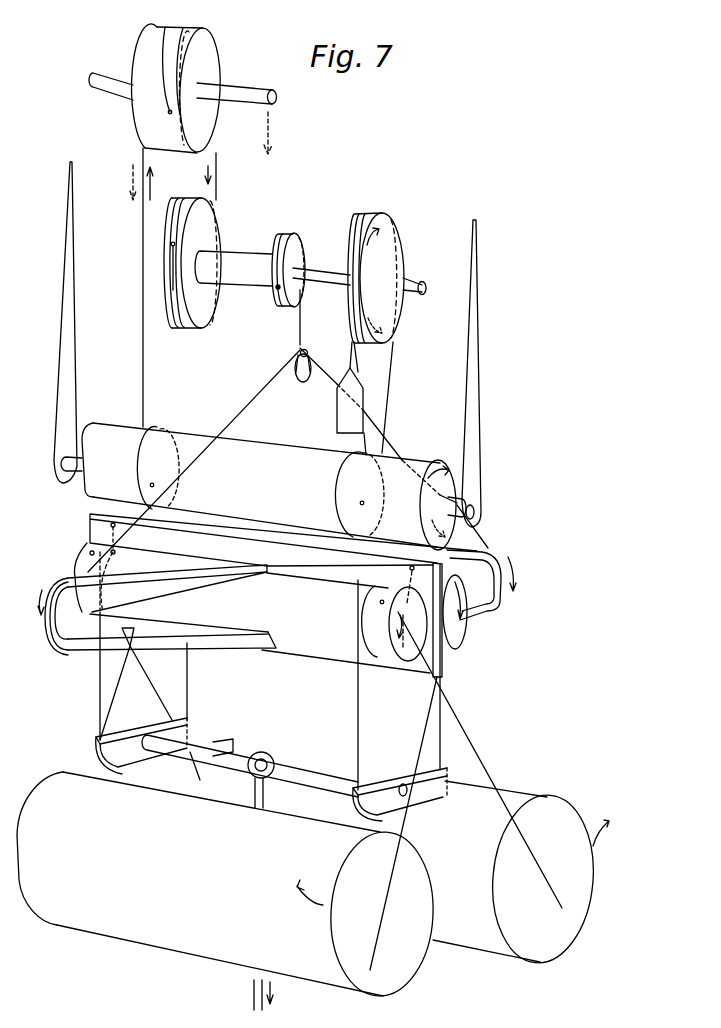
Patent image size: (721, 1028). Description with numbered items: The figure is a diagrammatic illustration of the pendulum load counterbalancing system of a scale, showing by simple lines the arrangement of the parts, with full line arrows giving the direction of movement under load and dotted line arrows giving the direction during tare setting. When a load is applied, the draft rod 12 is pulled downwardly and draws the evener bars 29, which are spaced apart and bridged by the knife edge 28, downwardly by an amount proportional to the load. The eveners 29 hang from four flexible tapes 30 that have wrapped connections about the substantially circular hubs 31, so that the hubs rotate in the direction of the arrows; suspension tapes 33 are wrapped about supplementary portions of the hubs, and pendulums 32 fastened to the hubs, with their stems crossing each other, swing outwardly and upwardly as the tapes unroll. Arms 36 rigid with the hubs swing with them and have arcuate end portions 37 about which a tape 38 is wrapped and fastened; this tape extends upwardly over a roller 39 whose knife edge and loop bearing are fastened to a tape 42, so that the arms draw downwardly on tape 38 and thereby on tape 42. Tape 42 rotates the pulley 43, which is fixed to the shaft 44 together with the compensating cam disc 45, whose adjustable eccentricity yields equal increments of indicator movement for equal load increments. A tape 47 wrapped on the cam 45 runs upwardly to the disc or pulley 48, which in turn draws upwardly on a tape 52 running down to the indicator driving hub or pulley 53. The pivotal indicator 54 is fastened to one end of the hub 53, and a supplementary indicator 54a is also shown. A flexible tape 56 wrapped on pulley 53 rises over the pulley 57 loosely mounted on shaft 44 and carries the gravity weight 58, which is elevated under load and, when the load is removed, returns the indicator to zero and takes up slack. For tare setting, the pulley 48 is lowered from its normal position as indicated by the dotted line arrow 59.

The draft rod 12 is at (266, 800).
The knife edge 28 is at (307, 773).
The evener bars 29 is at (145, 722).
The flexible tapes 30 is at (98, 693).
The circular hubs 31 is at (342, 574).
The pendulums 32 is at (313, 885).
The suspension tapes 33 is at (114, 550).
The arms 36 is at (75, 652).
The arcuate end portions 37 is at (285, 577).
The tape 38 is at (230, 414).
The roller 39 is at (295, 373).
The tape 42 is at (297, 329).
The pulley 43 is at (278, 240).
The shaft 44 is at (317, 275).
The compensating cam disc 45 is at (212, 218).
The tape 47 is at (219, 168).
The disc or pulley 48 is at (144, 41).
The tape 52 is at (143, 234).
The indicator driving hub or pulley 53 is at (290, 432).
The indicator 54 is at (64, 274).
The supplementary indicator 54a is at (476, 306).
The flexible tape 56 is at (396, 368).
The pulley 57 is at (385, 233).
The gravity weight 58 is at (338, 414).
The dotted line arrow 59 is at (270, 127).